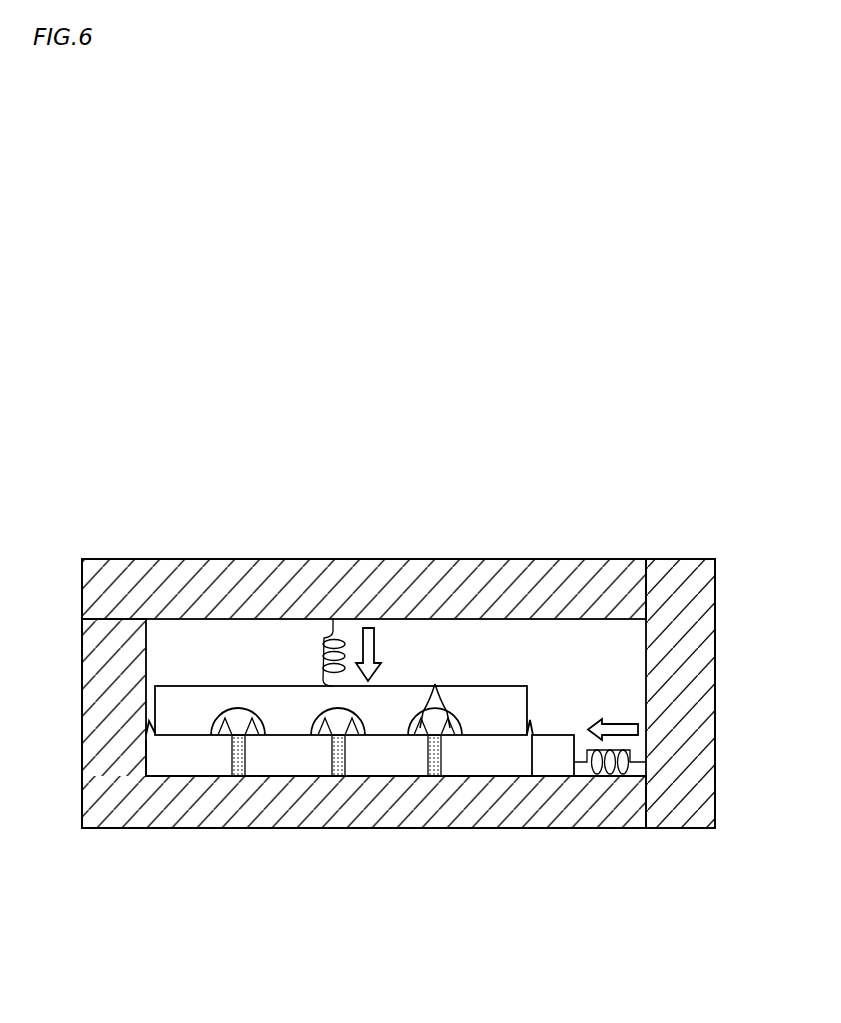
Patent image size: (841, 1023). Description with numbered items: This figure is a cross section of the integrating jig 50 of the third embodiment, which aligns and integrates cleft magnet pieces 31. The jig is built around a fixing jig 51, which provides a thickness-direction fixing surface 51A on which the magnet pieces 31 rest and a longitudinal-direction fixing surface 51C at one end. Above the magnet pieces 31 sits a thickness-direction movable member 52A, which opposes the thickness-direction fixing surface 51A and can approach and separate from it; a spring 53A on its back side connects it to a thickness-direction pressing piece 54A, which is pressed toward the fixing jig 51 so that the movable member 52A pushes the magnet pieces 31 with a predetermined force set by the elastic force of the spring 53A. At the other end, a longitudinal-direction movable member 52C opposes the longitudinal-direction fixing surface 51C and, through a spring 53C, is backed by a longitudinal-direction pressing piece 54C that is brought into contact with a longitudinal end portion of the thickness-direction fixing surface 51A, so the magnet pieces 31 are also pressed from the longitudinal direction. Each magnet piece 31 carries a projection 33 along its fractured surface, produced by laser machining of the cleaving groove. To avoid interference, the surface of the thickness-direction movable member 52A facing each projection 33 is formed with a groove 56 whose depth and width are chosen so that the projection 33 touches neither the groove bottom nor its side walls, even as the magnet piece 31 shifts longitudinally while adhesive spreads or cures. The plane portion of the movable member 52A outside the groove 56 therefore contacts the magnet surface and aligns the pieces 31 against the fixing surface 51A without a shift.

The integrating jig 50 is at (563, 551).
The thickness-direction pressing piece 54A is at (250, 578).
The longitudinal-direction pressing piece 54C is at (680, 806).
The fixing jig 51 is at (108, 800).
The thickness-direction fixing surface 51A is at (300, 768).
The longitudinal-direction fixing surface 51C is at (150, 762).
The magnet piece 31 is at (483, 762).
The thickness-direction movable member 52A is at (218, 706).
The spring 53A is at (322, 651).
The groove 56 is at (355, 710).
The projection 33 is at (435, 684).
The longitudinal-direction movable member 52C is at (548, 763).
The spring 53C is at (608, 774).